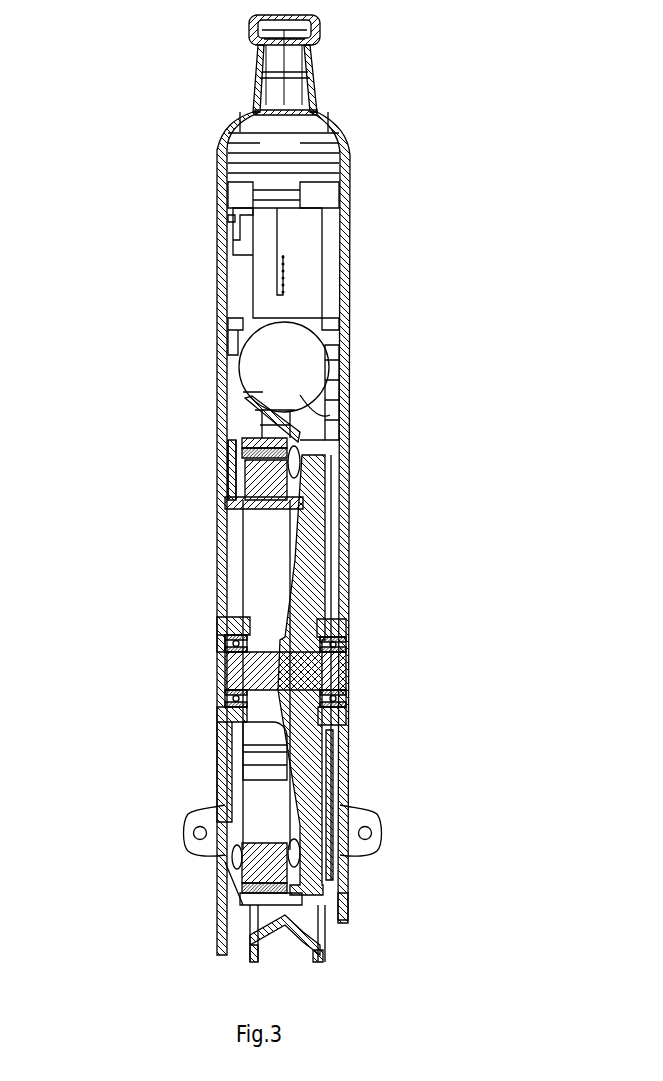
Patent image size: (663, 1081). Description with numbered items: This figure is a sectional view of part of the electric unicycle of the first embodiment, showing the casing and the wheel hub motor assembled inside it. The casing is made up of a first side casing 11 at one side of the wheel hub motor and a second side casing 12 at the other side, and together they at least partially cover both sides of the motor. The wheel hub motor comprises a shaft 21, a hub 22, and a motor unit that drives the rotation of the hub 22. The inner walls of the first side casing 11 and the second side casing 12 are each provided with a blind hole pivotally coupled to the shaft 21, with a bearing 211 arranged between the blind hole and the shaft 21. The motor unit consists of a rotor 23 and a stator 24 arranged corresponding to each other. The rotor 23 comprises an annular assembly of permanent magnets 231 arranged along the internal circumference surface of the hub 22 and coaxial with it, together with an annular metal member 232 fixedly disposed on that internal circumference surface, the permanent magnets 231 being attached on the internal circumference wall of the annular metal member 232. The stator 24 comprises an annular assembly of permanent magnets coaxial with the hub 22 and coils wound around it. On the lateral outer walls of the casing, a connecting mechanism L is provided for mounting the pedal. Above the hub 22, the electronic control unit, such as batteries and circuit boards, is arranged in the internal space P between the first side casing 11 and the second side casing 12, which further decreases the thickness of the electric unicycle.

The first side casing 11 is at (345, 258).
The second side casing 12 is at (225, 248).
The internal space P is at (305, 233).
The rotor 23 is at (161, 423).
The annular assembly of permanent magnets 231 is at (240, 423).
The annular metal member 232 is at (243, 452).
The stator 24 is at (253, 485).
The hub 22 is at (322, 538).
The shaft 21 is at (238, 685).
The bearing 211 is at (235, 637).
The connecting mechanism L is at (371, 833).